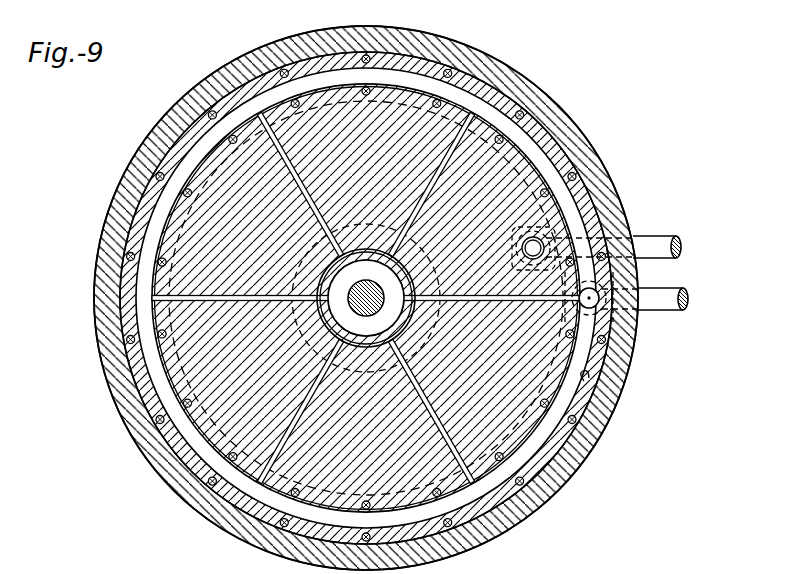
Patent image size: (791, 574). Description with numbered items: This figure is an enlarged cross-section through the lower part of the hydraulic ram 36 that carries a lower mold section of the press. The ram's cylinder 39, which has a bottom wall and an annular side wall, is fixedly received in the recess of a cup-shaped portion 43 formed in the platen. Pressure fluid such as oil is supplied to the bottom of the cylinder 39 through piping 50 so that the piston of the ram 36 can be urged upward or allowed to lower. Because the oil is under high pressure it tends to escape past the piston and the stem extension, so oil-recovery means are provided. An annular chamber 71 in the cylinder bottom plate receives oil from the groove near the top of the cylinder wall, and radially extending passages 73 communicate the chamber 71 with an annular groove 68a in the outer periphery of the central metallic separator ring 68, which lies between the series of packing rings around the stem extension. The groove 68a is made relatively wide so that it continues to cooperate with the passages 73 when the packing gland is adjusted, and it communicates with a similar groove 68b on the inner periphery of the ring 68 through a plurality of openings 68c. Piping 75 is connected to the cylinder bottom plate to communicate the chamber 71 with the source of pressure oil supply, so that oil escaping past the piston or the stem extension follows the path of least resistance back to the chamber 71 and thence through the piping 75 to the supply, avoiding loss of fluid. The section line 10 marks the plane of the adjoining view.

The hydraulic ram 36 is at (92, 258).
The cup-shaped portion 43 is at (560, 472).
The cylinder 39 is at (558, 443).
The radially extending passages 73 is at (178, 310).
The central metallic separator ring 68 is at (328, 320).
The annular groove 68a is at (325, 264).
The groove 68b is at (351, 347).
The openings 68c is at (354, 250).
The section line 10 is at (253, 268).
The piping 50 is at (656, 246).
The piping 75 is at (657, 310).
The annular chamber 71 is at (586, 380).